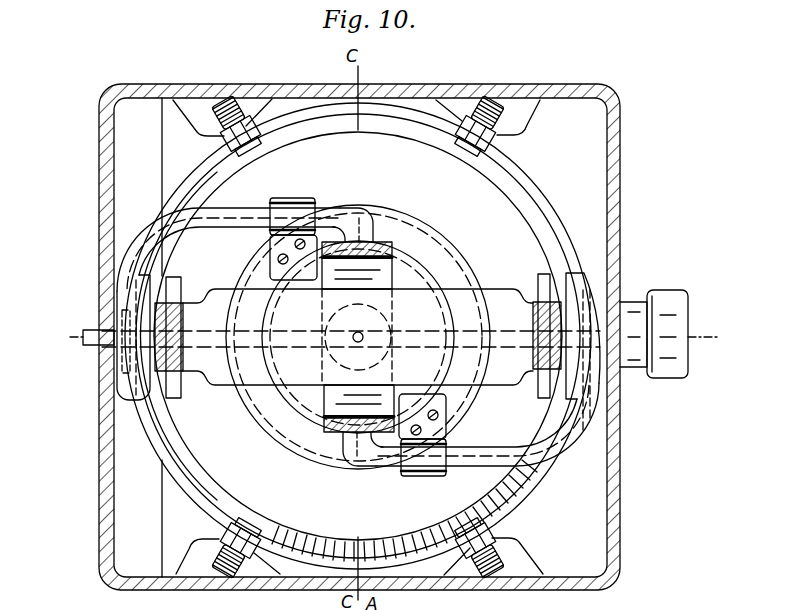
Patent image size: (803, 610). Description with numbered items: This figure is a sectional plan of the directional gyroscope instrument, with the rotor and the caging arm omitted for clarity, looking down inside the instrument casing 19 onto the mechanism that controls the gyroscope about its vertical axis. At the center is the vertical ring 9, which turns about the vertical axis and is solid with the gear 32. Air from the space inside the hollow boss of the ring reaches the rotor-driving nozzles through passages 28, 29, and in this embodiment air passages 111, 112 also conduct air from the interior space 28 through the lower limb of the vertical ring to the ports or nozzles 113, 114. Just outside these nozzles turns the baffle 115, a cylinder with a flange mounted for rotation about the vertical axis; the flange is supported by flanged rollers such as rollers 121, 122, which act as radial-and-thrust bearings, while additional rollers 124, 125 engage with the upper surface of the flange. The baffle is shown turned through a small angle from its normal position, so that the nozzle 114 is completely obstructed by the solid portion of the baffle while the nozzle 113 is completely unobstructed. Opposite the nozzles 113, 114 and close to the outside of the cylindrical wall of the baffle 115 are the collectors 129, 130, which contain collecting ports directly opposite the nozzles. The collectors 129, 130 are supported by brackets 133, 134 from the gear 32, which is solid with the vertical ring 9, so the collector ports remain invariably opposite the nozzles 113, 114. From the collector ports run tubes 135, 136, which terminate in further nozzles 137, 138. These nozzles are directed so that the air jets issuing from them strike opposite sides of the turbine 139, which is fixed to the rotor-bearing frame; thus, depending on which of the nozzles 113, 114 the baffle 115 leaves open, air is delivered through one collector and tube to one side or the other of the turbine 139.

The vertical ring 9 is at (398, 298).
The instrument casing 19 is at (101, 497).
The passage 28 is at (345, 340).
The passage 29 is at (128, 389).
The gear 32 is at (323, 444).
The air passage 111 is at (358, 337).
The air passage 112 is at (452, 268).
The port or nozzle 113 is at (183, 305).
The port or nozzle 114 is at (537, 302).
The baffle 115 is at (200, 478).
The flanged roller 121 is at (497, 140).
The flanged roller 122 is at (493, 528).
The roller 124 is at (250, 527).
The roller 125 is at (250, 124).
The collector 129 is at (138, 290).
The collector 130 is at (590, 283).
The bracket 133 is at (290, 226).
The bracket 134 is at (444, 425).
The tube 135 is at (149, 247).
The tube 136 is at (481, 457).
The nozzle 137 is at (363, 224).
The nozzle 138 is at (355, 460).
The turbine 139 is at (374, 250).